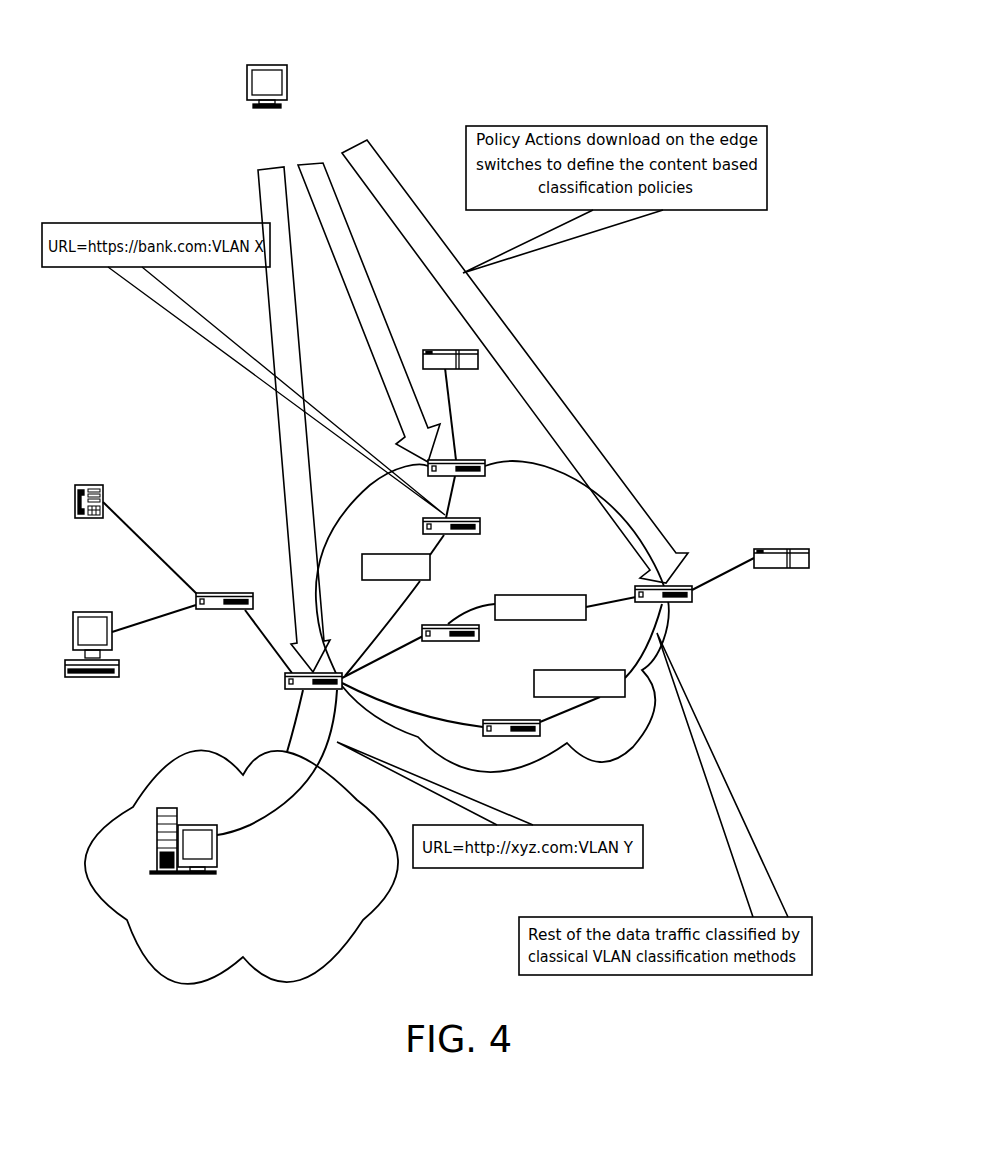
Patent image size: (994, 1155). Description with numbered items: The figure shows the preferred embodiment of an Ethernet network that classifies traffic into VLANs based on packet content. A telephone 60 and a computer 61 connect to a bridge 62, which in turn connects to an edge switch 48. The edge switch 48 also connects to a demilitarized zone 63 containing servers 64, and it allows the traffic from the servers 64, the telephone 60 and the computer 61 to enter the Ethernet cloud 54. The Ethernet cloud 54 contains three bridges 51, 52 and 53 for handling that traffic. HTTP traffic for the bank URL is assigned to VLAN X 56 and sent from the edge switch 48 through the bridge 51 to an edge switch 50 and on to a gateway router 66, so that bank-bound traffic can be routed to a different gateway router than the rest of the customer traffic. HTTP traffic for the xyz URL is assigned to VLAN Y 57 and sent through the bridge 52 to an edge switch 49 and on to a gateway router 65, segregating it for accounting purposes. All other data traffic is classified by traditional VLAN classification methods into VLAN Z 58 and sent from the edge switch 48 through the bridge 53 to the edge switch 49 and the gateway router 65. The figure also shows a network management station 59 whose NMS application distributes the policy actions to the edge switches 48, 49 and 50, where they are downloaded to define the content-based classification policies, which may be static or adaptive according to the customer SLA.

The edge switch 48 is at (285, 680).
The edge switch 49 is at (680, 585).
The edge switch 50 is at (478, 460).
The bridge 51 is at (482, 527).
The bridge 52 is at (478, 633).
The bridge 53 is at (483, 722).
The Ethernet cloud 54 is at (633, 748).
The VLAN X 56 is at (376, 554).
The VLAN Y 57 is at (592, 597).
The VLAN Z 58 is at (534, 686).
The network management station 59 is at (265, 65).
The telephone 60 is at (88, 485).
The computer 61 is at (119, 670).
The bridge 62 is at (196, 602).
The demilitarized zone 63 is at (395, 895).
The servers 64 is at (196, 825).
The gateway router 65 is at (795, 549).
The gateway router 66 is at (430, 350).